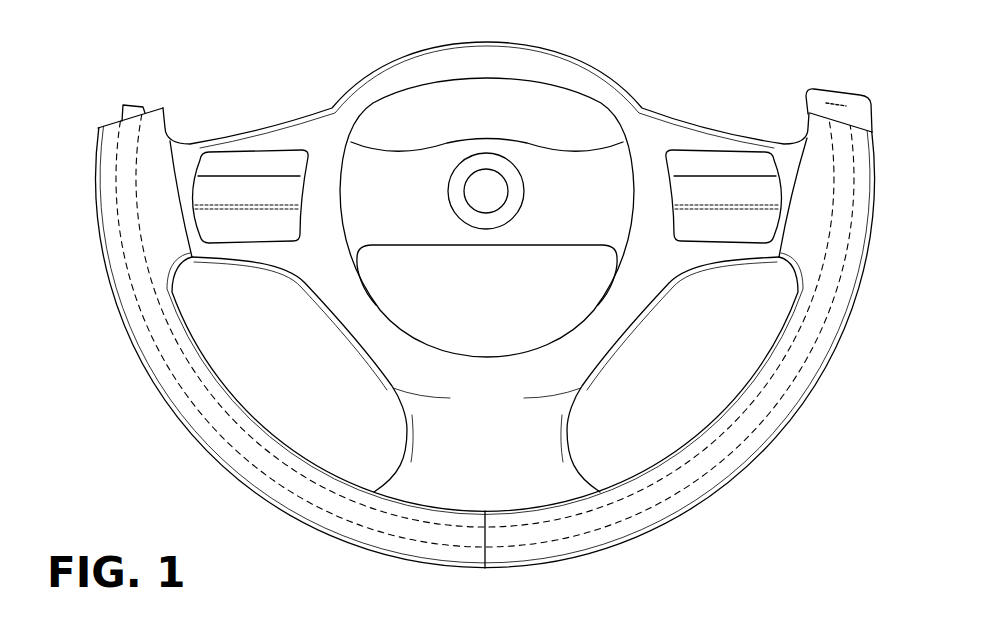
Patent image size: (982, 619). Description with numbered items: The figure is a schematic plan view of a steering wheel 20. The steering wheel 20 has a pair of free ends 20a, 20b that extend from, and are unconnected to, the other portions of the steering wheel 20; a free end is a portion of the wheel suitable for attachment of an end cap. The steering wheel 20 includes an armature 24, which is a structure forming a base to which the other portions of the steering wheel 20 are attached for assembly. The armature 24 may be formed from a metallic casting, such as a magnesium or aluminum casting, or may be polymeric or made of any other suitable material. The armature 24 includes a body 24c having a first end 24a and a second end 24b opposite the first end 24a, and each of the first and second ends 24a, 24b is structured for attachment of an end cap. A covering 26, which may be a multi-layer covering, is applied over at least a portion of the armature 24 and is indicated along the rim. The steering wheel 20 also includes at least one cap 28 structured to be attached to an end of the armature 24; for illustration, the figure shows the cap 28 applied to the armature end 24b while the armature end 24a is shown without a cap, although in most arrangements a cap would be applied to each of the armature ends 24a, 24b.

The steering wheel 20 is at (341, 67).
The free end 20a is at (107, 148).
The free end 20b is at (869, 150).
The armature 24 is at (189, 381).
The first end 24a is at (133, 104).
The second end 24b is at (837, 100).
The body 24c is at (128, 255).
The covering 26 is at (98, 178).
The cap 28 is at (812, 88).